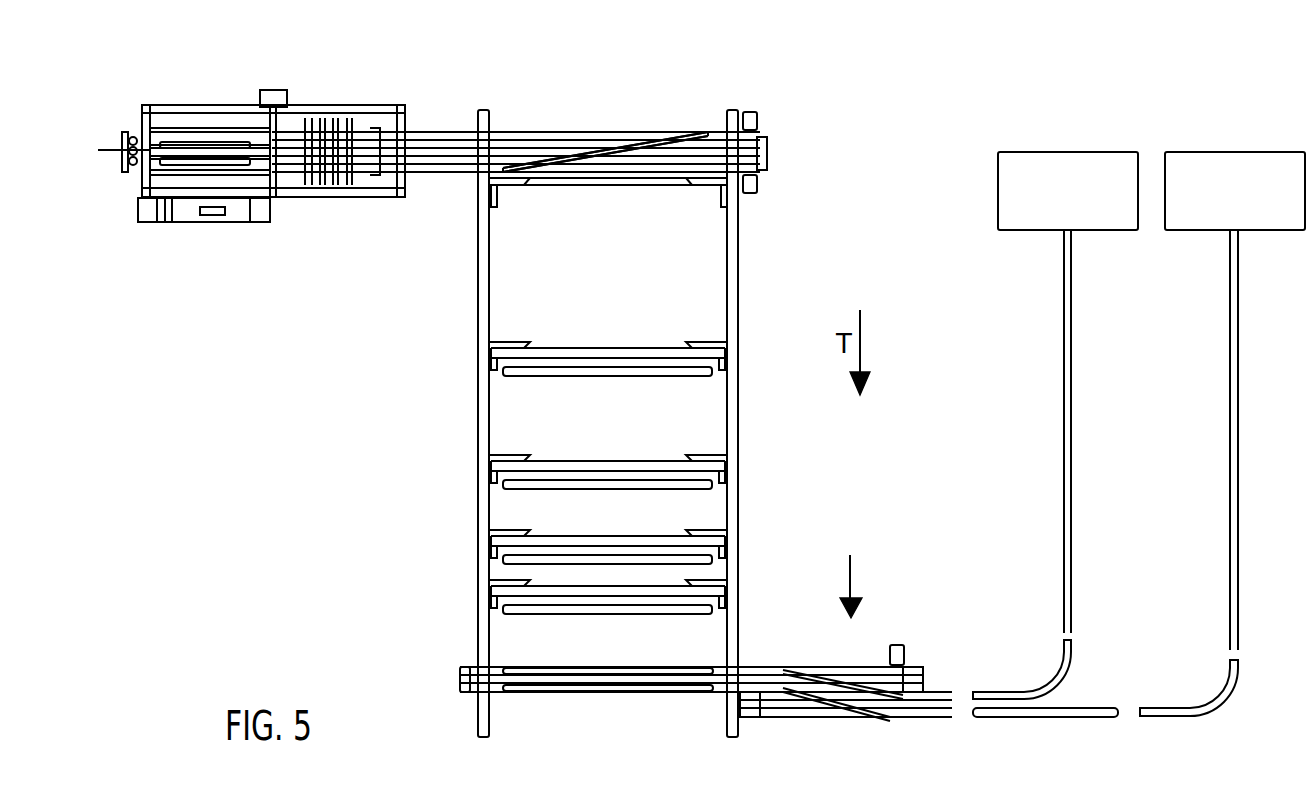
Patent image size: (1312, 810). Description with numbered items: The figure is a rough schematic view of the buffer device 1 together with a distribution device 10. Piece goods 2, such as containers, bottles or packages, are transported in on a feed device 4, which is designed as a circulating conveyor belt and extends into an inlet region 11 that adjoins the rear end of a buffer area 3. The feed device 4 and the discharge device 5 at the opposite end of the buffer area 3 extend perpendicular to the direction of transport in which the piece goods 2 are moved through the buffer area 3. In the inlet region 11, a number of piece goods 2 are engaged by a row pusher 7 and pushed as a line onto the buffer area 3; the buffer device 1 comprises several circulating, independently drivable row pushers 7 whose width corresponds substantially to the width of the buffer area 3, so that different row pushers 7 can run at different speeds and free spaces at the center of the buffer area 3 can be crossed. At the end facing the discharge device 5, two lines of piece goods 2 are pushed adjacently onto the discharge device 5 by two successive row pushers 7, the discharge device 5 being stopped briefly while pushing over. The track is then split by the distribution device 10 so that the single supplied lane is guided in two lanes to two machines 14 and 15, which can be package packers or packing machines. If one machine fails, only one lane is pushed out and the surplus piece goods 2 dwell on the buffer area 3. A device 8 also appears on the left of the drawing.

The buffer device 1 is at (877, 125).
The piece goods 2 is at (546, 158).
The buffer area 3 is at (601, 283).
The feed device 4 is at (442, 131).
The discharge device 5 is at (677, 667).
The row pusher 7 is at (676, 348).
The loading machine 8 is at (214, 105).
The distribution device 10 is at (853, 565).
The inlet region 11 is at (604, 130).
The machine 14 is at (1123, 151).
The machine 15 is at (1288, 151).